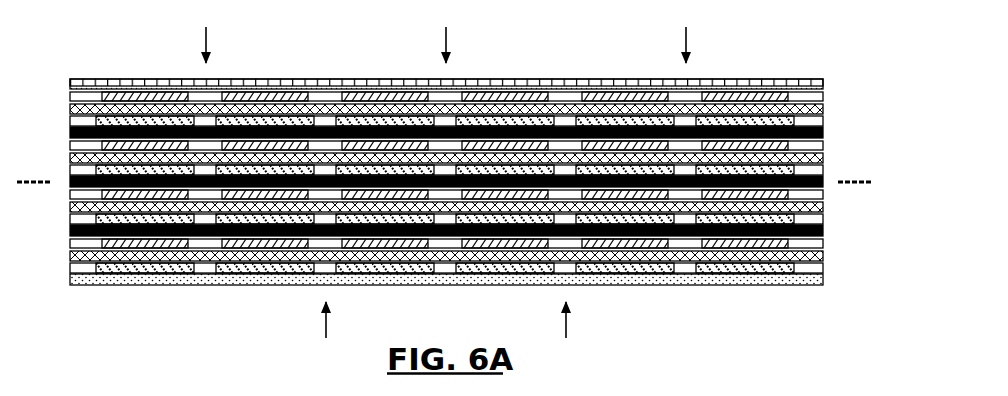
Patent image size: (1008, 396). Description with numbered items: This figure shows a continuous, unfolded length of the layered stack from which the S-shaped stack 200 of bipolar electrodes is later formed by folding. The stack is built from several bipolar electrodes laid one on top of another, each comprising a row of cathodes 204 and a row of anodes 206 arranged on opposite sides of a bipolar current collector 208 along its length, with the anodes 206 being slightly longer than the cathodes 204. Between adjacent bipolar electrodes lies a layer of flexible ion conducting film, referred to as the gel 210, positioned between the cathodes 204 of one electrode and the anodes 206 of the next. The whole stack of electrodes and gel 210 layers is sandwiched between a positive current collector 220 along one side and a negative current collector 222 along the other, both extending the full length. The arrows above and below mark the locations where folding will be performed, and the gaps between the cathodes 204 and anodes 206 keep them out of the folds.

The S-shaped stack 200 is at (759, 43).
The positive current collector 220 is at (823, 81).
The flexible ion conducting film 210 is at (823, 108).
The cathodes 204 is at (790, 147).
The anodes 206 is at (796, 170).
The bipolar current collector 208 is at (822, 230).
The negative current collector 222 is at (823, 277).